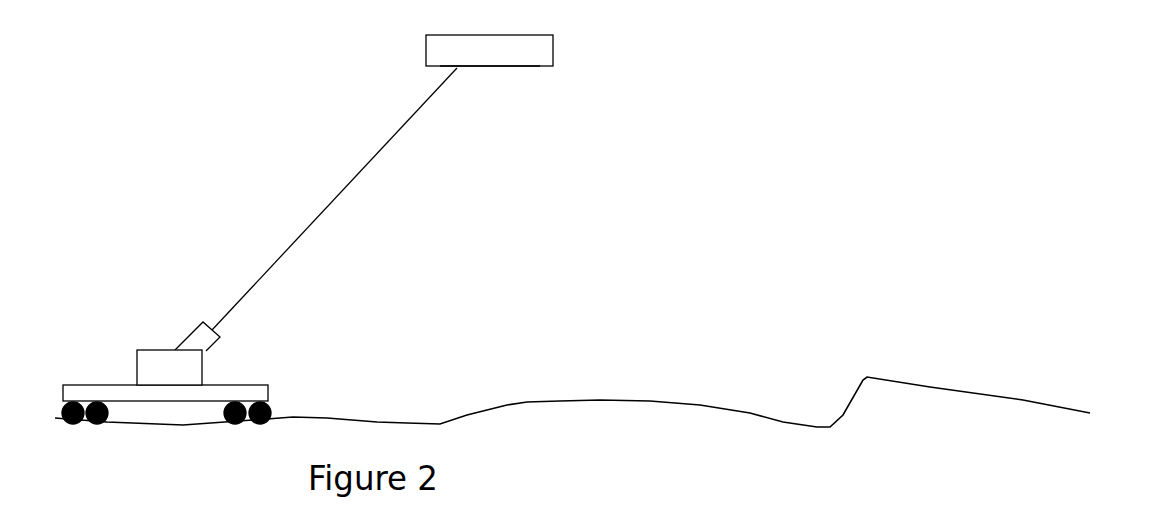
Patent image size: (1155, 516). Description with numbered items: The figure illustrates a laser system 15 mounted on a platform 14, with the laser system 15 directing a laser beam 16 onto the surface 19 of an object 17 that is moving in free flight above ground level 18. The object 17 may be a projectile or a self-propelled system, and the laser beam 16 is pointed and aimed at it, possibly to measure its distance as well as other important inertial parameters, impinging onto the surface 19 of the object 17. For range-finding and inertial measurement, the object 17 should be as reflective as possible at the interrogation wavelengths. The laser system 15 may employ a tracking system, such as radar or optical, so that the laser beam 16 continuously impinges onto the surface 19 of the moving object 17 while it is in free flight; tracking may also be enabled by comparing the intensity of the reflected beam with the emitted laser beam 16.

The platform 14 is at (183, 402).
The laser system 15 is at (190, 337).
The laser beam 16 is at (333, 198).
The object 17 is at (554, 53).
The ground level 18 is at (652, 400).
The surface 19 is at (482, 68).